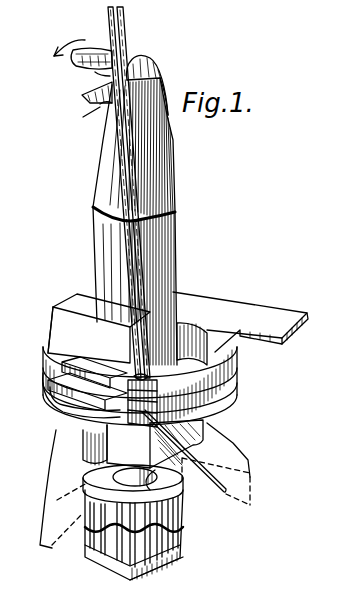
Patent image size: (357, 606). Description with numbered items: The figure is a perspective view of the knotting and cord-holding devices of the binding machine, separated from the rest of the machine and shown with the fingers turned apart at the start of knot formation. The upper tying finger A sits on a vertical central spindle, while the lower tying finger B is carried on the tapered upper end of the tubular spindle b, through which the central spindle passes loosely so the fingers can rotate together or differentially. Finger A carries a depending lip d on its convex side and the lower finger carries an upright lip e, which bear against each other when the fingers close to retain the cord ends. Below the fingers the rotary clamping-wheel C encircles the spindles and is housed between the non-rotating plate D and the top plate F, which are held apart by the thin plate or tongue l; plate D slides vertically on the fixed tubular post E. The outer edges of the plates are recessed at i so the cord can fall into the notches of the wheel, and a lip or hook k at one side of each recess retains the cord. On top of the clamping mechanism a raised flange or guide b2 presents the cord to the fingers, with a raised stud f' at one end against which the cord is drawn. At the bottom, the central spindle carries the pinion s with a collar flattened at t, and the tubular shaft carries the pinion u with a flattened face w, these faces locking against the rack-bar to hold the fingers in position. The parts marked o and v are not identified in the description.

The upper tying finger A is at (162, 53).
The lower tying finger B is at (92, 100).
The depending lip d is at (88, 69).
The upright lip e is at (90, 110).
The tubular spindle b is at (103, 176).
The fixed tubular post E is at (206, 233).
The top plate F is at (240, 322).
The raised stud or shoulder f' is at (185, 336).
The raised flange or guide b2 is at (99, 328).
The lip or hook k is at (135, 372).
The recesses i is at (87, 383).
The rotary clamping-wheel C is at (55, 403).
The non-rotating plate D is at (177, 412).
The intermediate plate or tongue l is at (152, 392).
The hole o is at (95, 486).
The flattened face w is at (168, 481).
The pinion u is at (150, 512).
The pinion s is at (160, 545).
The flattened side of collar t is at (112, 567).
The bottom ring v is at (156, 581).